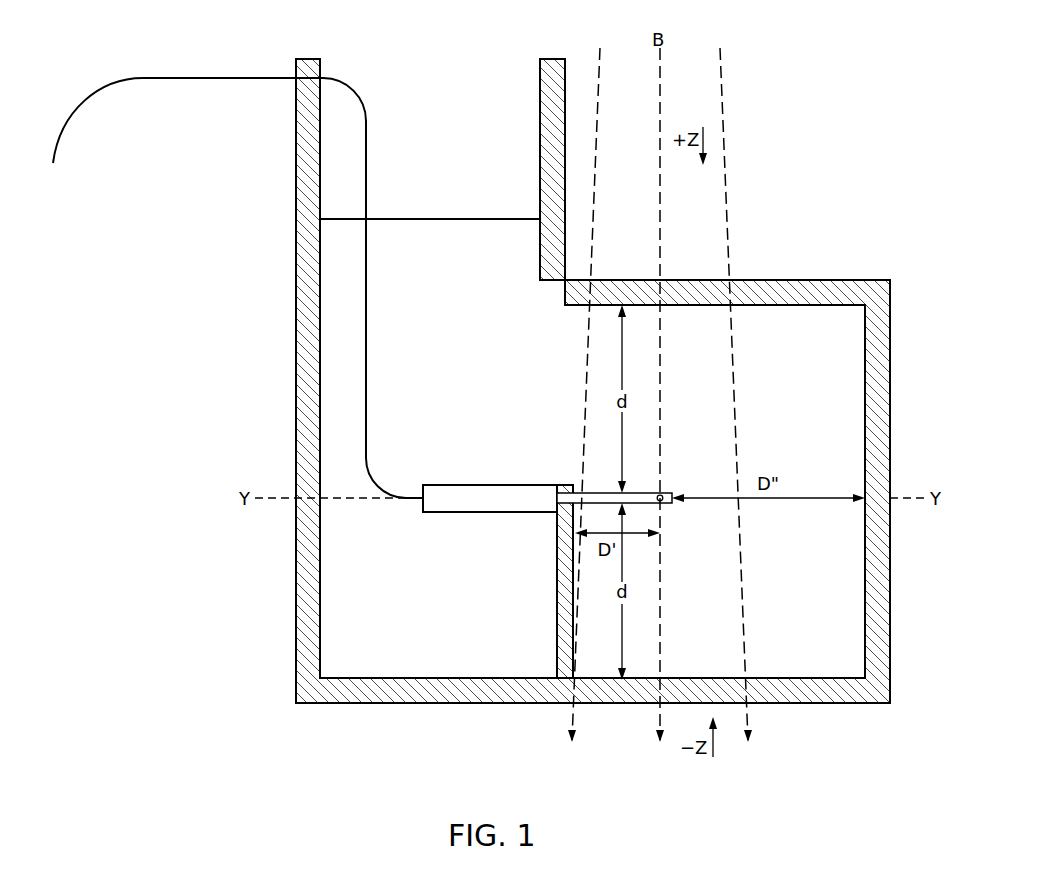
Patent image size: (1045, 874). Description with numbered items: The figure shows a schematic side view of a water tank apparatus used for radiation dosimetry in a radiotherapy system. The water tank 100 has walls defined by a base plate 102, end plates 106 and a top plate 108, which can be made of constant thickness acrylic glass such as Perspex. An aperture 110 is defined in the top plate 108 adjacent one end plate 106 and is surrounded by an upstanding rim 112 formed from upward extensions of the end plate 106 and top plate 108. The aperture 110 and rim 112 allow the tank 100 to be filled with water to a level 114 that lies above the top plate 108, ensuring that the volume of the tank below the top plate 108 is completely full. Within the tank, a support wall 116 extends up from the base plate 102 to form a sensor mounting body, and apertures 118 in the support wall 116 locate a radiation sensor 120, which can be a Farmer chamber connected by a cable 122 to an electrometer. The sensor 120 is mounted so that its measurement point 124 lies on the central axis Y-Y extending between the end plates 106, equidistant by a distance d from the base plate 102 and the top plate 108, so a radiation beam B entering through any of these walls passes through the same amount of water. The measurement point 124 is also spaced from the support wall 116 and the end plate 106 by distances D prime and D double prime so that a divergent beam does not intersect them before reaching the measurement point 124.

The water tank 100 is at (832, 356).
The base plate 102 is at (805, 703).
The end plate 106 is at (890, 397).
The top plate 108 is at (766, 280).
The aperture 110 is at (444, 287).
The upstanding rim 112 is at (540, 104).
The water level 114 is at (430, 219).
The support wall 116 is at (557, 580).
The aperture 118 is at (563, 501).
The radiation sensor 120 is at (490, 485).
The cable 122 is at (88, 102).
The measurement point 124 is at (663, 494).